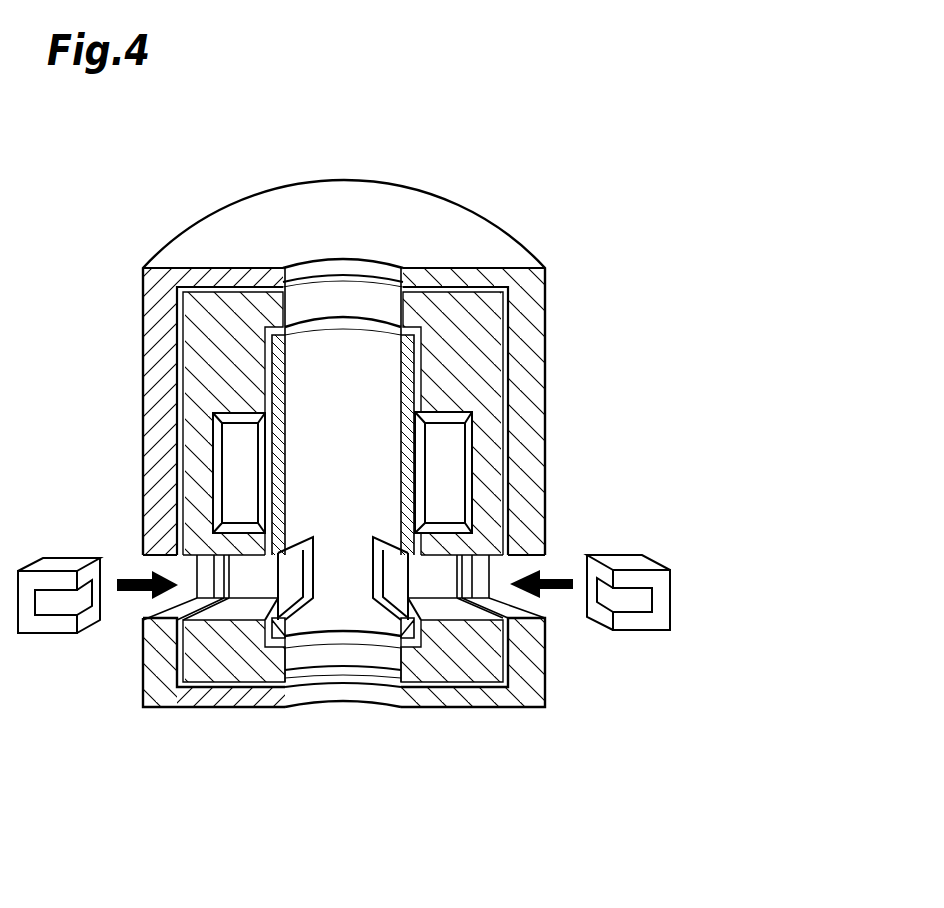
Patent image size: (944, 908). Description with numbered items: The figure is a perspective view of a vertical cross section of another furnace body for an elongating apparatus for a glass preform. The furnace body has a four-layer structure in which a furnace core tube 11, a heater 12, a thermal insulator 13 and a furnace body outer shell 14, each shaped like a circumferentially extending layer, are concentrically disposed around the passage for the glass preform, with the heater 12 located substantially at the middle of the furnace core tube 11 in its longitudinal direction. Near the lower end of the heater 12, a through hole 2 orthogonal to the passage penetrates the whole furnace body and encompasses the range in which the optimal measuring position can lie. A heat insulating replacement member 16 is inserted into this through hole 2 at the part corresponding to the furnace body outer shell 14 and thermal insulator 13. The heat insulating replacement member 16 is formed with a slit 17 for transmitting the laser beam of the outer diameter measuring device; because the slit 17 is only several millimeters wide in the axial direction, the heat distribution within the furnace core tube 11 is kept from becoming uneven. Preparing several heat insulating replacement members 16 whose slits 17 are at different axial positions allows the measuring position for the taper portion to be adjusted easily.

The furnace core tube 11 is at (418, 357).
The furnace body outer shell 14 is at (533, 310).
The thermal insulator 13 is at (495, 393).
The heater 12 is at (448, 465).
The heat insulating replacement member 16 is at (633, 558).
The through hole 2 is at (132, 596).
The slit 17 is at (597, 593).